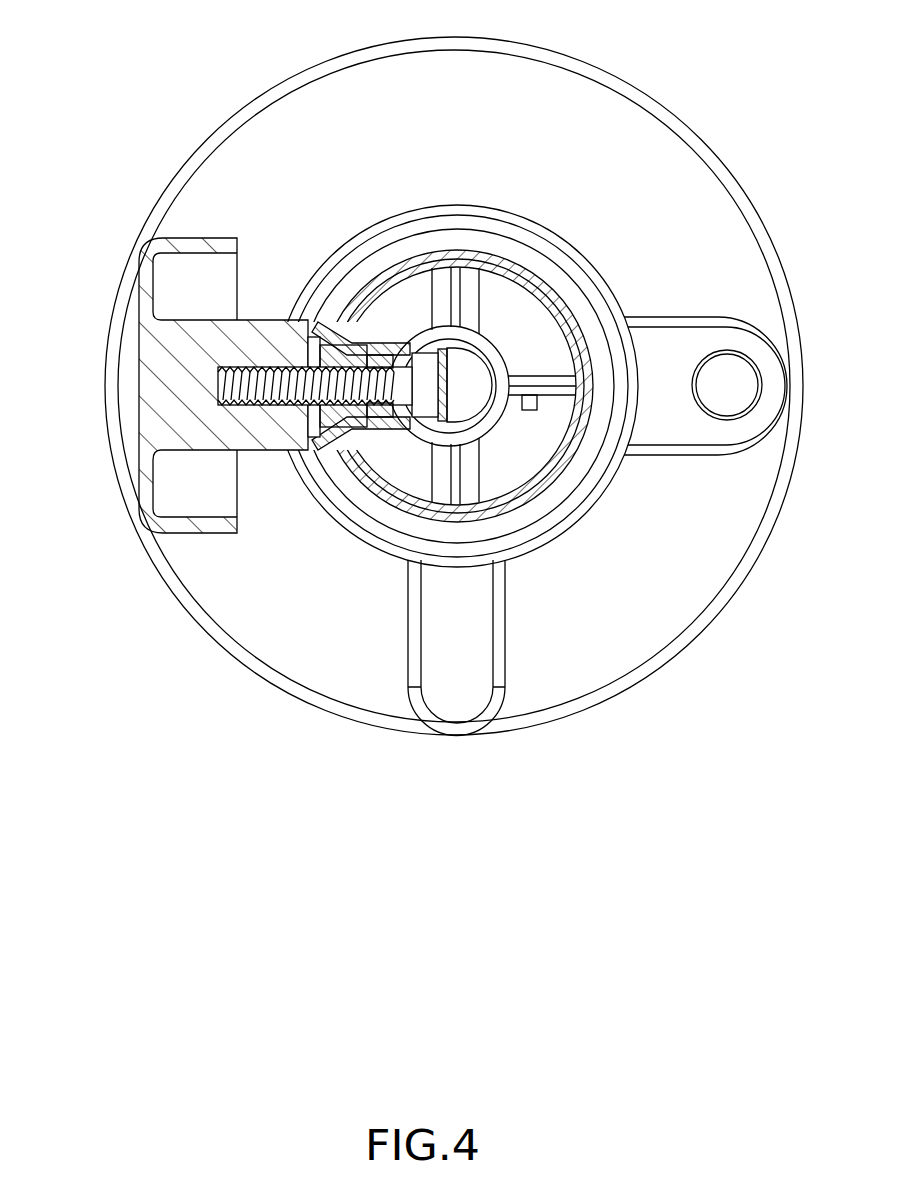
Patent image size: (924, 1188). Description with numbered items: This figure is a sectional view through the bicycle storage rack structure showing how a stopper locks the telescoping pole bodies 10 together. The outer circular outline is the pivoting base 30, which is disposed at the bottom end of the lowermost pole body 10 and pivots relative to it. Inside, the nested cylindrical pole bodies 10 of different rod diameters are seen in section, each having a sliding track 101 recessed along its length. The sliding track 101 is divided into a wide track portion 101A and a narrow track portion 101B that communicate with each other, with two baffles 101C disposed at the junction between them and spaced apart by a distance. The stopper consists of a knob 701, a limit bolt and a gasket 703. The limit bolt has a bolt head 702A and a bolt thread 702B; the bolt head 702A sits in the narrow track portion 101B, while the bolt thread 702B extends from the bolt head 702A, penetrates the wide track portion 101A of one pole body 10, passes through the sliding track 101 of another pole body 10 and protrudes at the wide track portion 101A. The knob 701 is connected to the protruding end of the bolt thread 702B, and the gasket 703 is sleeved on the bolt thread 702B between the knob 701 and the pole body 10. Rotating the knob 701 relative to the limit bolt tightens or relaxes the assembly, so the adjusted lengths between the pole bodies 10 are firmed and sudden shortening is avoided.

The pivoting base 30 is at (652, 94).
The pole body 10 is at (553, 290).
The sliding track 101 is at (530, 140).
The wide track portion 101A is at (366, 322).
The narrow track portion 101B is at (442, 330).
The baffle 101C is at (413, 345).
The knob 701 is at (139, 330).
The bolt head 702A is at (422, 412).
The bolt thread 702B is at (258, 408).
The gasket 703 is at (333, 335).